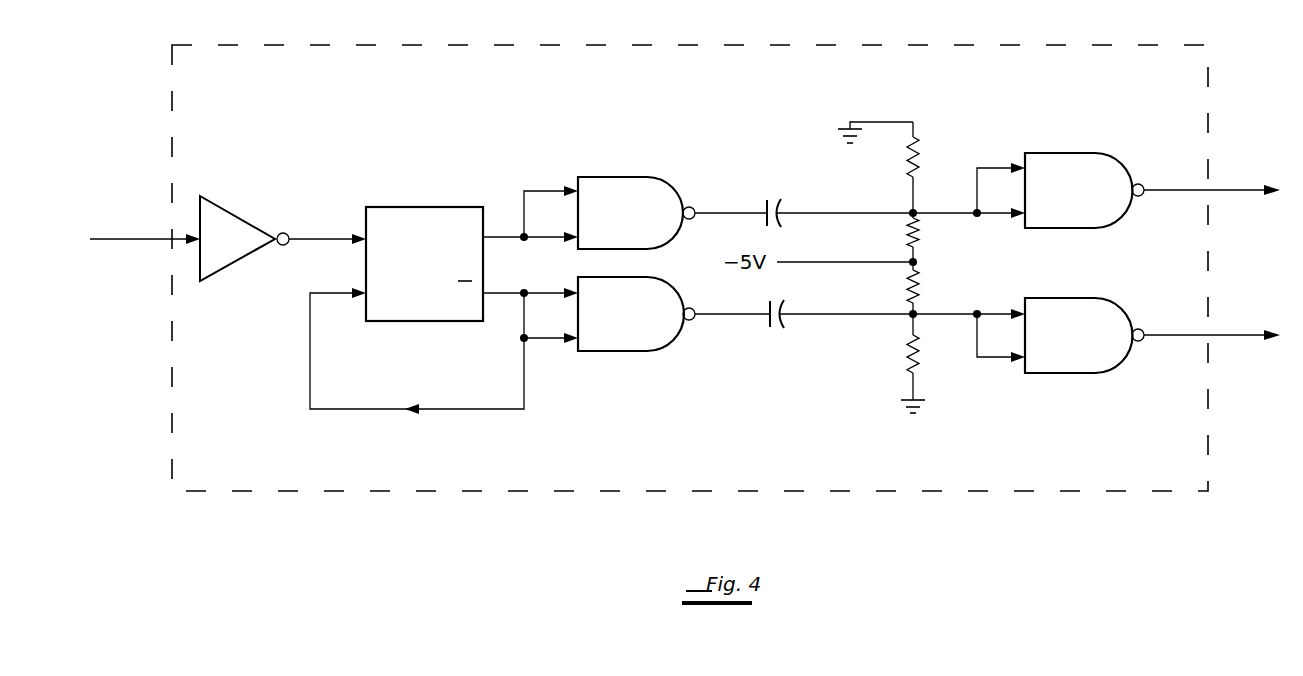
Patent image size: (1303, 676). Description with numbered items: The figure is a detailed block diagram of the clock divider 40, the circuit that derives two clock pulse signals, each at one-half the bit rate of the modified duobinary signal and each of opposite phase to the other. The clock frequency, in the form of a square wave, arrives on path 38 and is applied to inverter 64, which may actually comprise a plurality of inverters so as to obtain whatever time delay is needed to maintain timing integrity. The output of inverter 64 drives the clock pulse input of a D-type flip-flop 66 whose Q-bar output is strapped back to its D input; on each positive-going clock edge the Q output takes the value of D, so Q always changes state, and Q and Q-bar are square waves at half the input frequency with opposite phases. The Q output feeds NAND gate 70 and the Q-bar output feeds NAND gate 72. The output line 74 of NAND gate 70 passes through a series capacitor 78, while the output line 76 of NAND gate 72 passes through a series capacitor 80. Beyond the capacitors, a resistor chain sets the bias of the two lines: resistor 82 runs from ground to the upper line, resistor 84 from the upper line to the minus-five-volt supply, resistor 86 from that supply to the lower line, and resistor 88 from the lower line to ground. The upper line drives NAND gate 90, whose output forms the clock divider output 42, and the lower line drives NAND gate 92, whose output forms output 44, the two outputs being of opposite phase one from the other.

The path 38 is at (113, 237).
The clock divider 40 is at (263, 112).
The output 42 is at (1218, 189).
The output 44 is at (1216, 335).
The inverter 64 is at (226, 213).
The D-type flip-flop 66 is at (407, 206).
The NAND gate 70 is at (597, 177).
The NAND gate 72 is at (610, 351).
The output line 74 is at (701, 211).
The output line 76 is at (747, 317).
The capacitor 78 is at (782, 213).
The capacitor 80 is at (784, 316).
The resistor 82 is at (920, 162).
The resistor 84 is at (920, 242).
The resistor 86 is at (920, 288).
The resistor 88 is at (920, 360).
The NAND gate 90 is at (1043, 153).
The NAND gate 92 is at (1043, 298).